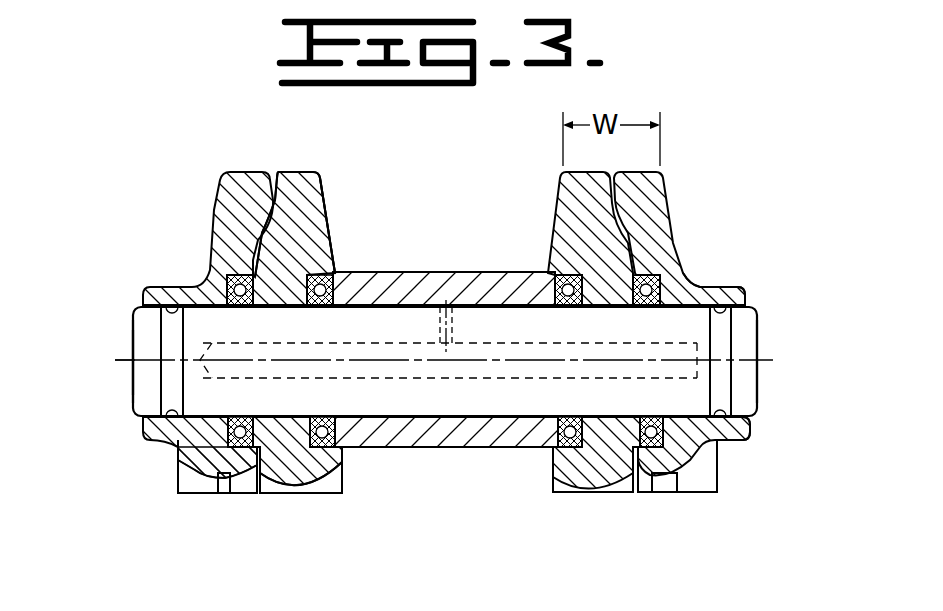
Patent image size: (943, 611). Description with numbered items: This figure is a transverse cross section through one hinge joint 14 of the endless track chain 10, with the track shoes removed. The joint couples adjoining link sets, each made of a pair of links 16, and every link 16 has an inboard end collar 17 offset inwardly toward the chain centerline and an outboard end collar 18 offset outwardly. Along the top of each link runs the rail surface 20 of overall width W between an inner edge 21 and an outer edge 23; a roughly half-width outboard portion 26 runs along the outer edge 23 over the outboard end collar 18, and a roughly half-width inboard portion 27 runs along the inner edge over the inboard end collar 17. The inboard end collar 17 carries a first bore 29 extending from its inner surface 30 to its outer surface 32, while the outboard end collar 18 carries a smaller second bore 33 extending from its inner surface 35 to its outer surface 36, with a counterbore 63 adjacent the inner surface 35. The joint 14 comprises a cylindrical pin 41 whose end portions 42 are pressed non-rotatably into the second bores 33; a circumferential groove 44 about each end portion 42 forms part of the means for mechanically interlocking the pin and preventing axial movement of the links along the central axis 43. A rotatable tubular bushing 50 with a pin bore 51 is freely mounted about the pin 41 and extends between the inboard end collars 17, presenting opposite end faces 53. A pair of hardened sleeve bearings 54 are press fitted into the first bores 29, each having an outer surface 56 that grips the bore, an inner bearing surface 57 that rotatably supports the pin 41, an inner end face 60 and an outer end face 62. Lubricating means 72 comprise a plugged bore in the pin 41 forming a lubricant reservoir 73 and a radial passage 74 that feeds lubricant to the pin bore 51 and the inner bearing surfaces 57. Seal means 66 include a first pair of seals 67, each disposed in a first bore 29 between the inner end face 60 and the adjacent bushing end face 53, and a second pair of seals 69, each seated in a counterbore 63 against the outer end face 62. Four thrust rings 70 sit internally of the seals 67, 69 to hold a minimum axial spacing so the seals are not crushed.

The track chain 10 is at (188, 104).
The hinge joint 14 is at (120, 378).
The link 16 is at (210, 245).
The inboard end collar 17 is at (330, 250).
The outboard end collar 18 is at (200, 285).
The rail surface 20 is at (300, 170).
The inner edge 21 is at (320, 173).
The outer edge 23 is at (228, 170).
The outboard portion 26 is at (243, 172).
The inboard portion 27 is at (315, 172).
The first bore 29 is at (595, 483).
The inner surface 30 is at (345, 275).
The outer surface 32 is at (240, 465).
The second bore 33 is at (186, 430).
The inner surface 35 is at (625, 477).
The outer surface 36 is at (745, 432).
The cylindrical pin 41 is at (760, 326).
The end portions 42 is at (753, 312).
The central axis 43 is at (145, 355).
The groove 44 is at (732, 393).
The tubular bushing 50 is at (465, 458).
The pin bore 51 is at (437, 415).
The end faces 53 is at (323, 423).
The hardened sleeve bearings 54 is at (633, 247).
The outer surface 56 is at (634, 432).
The inner bearing surface 57 is at (283, 313).
The inner end face 60 is at (330, 310).
The outer end face 62 is at (253, 310).
The counterbore 63 is at (702, 284).
The seal means 66 is at (318, 472).
The first pair of seals 67 is at (538, 290).
The second pair of seals 69 is at (200, 452).
The thrust rings 70 is at (567, 307).
The lubricating means 72 is at (493, 392).
The lubricant reservoir 73 is at (327, 378).
The radial passage 74 is at (437, 316).